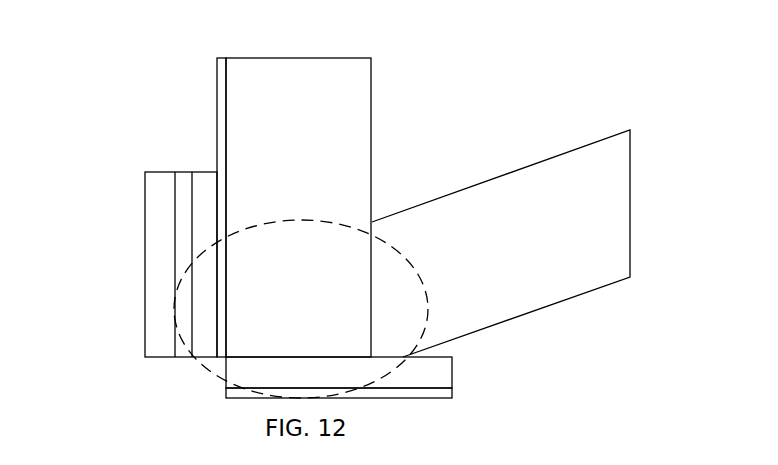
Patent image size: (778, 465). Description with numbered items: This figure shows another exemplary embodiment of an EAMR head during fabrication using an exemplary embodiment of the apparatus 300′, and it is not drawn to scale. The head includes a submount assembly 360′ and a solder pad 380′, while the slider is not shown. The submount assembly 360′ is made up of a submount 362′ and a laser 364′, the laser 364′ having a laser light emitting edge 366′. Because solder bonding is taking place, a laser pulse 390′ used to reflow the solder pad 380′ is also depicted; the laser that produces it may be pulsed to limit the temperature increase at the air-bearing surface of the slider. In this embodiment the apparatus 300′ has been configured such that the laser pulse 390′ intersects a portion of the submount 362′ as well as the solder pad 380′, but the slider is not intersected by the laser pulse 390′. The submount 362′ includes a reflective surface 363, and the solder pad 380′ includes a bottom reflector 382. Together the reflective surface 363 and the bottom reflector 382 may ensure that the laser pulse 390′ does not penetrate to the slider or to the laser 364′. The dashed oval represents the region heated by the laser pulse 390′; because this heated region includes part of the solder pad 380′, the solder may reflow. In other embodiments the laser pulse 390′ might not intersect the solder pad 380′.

The apparatus 300′ is at (330, 37).
The submount assembly 360′ is at (78, 187).
The submount 362′ is at (373, 155).
The reflective surface 363 is at (217, 97).
The laser 364′ is at (180, 172).
The laser light emitting edge 366′ is at (179, 370).
The solder pad 380′ is at (452, 366).
The bottom reflector 382 is at (420, 398).
The laser pulse 390′ is at (630, 160).